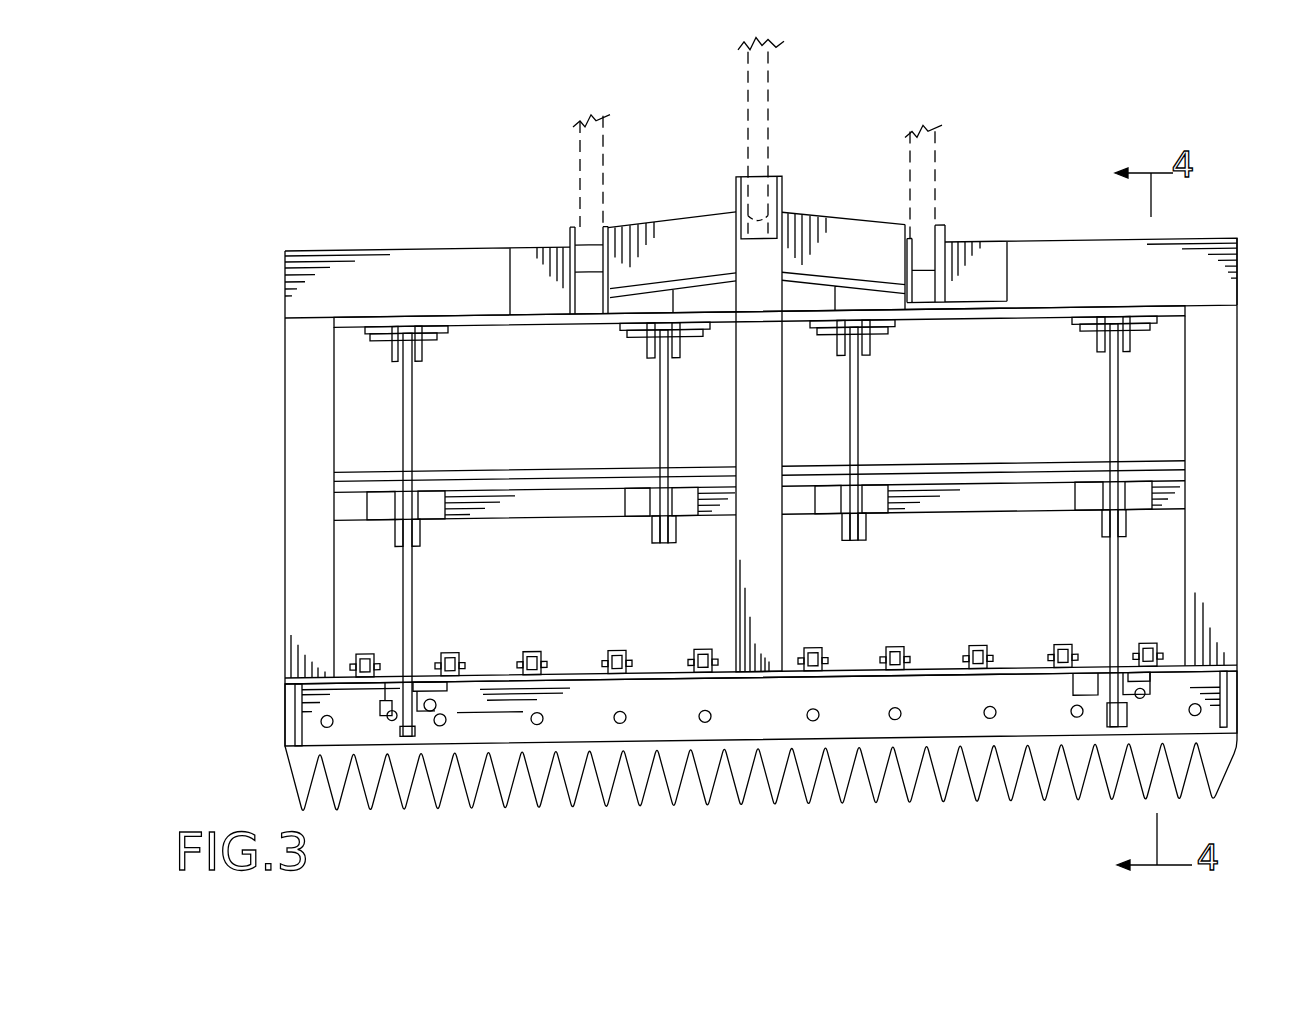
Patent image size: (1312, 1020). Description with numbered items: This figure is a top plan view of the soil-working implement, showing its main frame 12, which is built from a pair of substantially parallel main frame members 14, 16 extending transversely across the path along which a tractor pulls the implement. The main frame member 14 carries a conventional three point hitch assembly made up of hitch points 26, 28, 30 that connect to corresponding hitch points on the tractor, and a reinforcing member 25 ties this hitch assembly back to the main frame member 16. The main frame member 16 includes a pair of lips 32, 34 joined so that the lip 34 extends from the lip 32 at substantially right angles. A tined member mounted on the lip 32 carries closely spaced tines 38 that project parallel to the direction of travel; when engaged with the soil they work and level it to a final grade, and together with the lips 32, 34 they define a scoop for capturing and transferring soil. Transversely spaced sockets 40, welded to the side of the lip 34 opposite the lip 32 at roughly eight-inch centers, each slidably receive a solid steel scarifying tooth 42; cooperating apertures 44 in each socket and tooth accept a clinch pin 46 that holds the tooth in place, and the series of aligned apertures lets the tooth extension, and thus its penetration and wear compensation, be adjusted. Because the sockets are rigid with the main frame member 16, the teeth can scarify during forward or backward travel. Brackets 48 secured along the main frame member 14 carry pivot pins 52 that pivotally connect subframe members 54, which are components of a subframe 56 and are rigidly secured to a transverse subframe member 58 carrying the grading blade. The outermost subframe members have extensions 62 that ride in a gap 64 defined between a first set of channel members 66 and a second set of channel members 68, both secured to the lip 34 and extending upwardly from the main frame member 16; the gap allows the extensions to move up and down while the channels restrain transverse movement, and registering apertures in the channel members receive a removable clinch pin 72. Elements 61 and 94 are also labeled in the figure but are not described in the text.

The main frame 12 is at (1220, 423).
The main frame member 14 is at (1243, 261).
The main frame member 16 is at (1246, 688).
The reinforcing member 25 is at (742, 420).
The hitch point 26 is at (782, 192).
The hitch point 28 is at (588, 260).
The hitch point 30 is at (918, 257).
The lip 32 is at (1015, 724).
The lip 34 is at (1030, 678).
The tines 38 is at (905, 805).
The sockets 40 is at (822, 660).
The scarifying tooth 42 is at (972, 660).
The apertures 44 is at (812, 660).
The clinch pin 46 is at (605, 660).
The brackets 48 is at (448, 335).
The pivot pin 52 is at (430, 340).
The subframe members 54 is at (413, 437).
The subframe 56 is at (1066, 522).
The transverse subframe member 58 is at (527, 472).
The bracket 61 is at (430, 508).
The extensions 62 is at (412, 690).
The gap 64 is at (1090, 497).
The channel members 66 is at (1100, 720).
The channel members 68 is at (432, 712).
The removable clinch pin 72 is at (388, 714).
The beam 94 is at (843, 212).